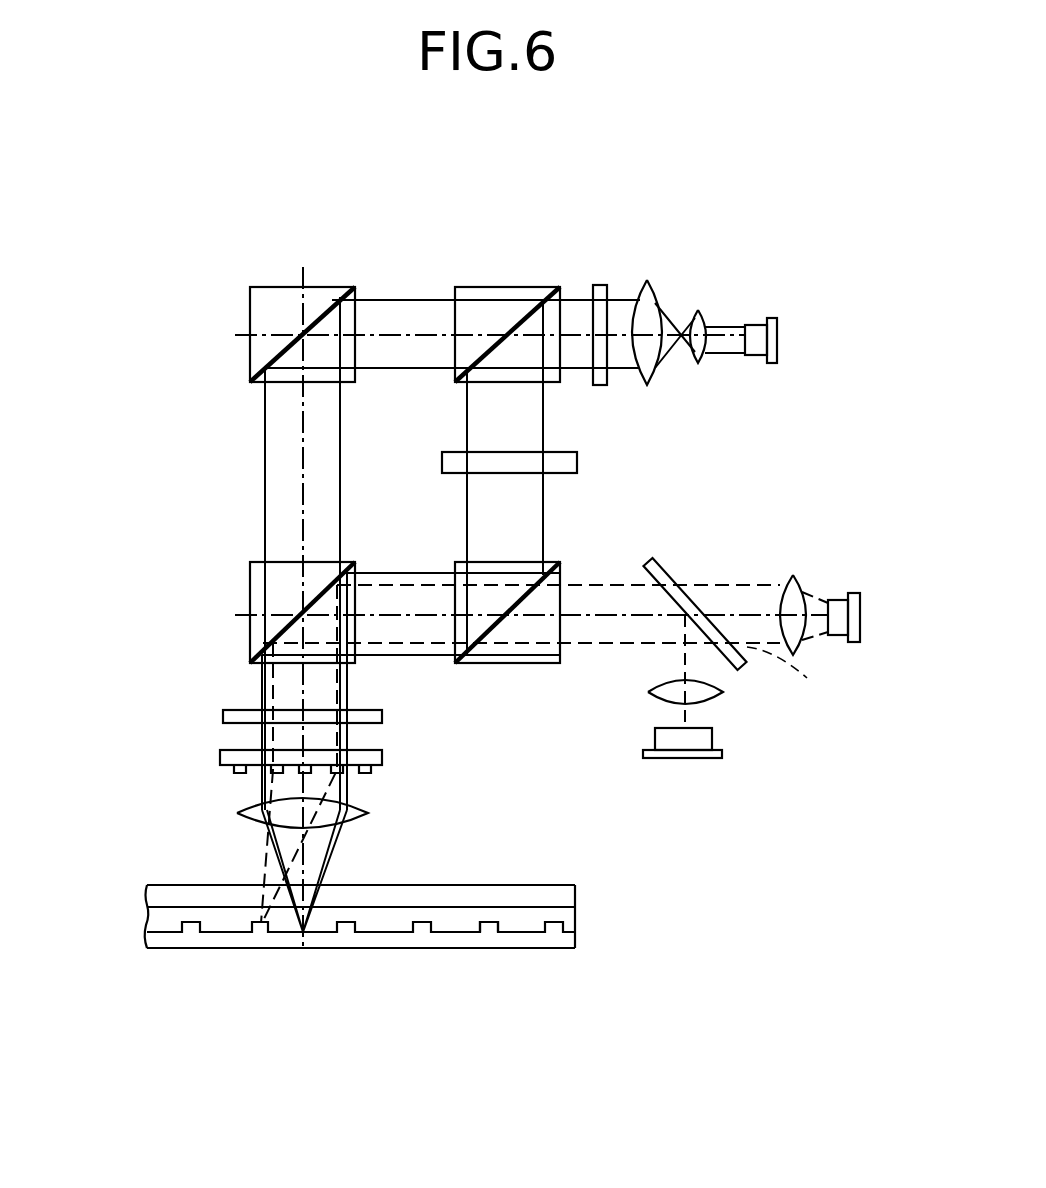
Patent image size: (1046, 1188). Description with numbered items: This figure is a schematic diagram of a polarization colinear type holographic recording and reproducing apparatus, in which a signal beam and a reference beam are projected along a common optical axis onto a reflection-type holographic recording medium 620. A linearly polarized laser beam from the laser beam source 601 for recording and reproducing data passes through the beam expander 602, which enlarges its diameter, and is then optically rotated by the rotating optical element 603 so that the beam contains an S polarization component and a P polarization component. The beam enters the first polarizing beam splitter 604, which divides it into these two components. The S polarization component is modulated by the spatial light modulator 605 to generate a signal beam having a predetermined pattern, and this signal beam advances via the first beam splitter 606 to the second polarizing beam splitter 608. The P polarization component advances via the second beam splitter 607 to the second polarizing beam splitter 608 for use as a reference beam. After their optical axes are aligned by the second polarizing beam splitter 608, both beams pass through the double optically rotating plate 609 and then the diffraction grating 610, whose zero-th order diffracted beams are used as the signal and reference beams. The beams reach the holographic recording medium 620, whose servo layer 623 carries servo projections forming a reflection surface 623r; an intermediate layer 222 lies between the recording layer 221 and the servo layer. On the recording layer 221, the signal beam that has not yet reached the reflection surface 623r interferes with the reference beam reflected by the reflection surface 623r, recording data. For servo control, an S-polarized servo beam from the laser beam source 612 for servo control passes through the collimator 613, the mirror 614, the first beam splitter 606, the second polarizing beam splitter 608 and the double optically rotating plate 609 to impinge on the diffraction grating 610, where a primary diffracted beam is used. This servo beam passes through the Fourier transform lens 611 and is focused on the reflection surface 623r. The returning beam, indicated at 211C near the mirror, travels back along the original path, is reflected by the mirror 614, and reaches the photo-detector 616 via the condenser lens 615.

The laser beam source 601 is at (750, 325).
The beam expander 602 is at (710, 275).
The rotating optical element 603 is at (603, 285).
The first polarizing beam splitter 604 is at (505, 287).
The spatial light modulator 605 is at (577, 462).
The first beam splitter 606 is at (552, 561).
The second beam splitter 607 is at (330, 287).
The second polarizing beam splitter 608 is at (250, 603).
The double optically rotating plate 609 is at (382, 717).
The diffraction grating 610 is at (382, 757).
The Fourier transform lens 611 is at (368, 813).
The laser beam source for servo control 612 is at (855, 594).
The collimator 613 is at (798, 582).
The mirror 614 is at (667, 561).
The condenser lens 615 is at (712, 697).
The photo-detector 616 is at (712, 742).
The reflected light beam 211C is at (816, 676).
The recording layer 221 is at (562, 900).
The intermediate layer 222 is at (568, 915).
The servo layer 623 is at (568, 942).
The reflection surface 623r is at (528, 925).
The holographic recording medium 620 is at (369, 947).